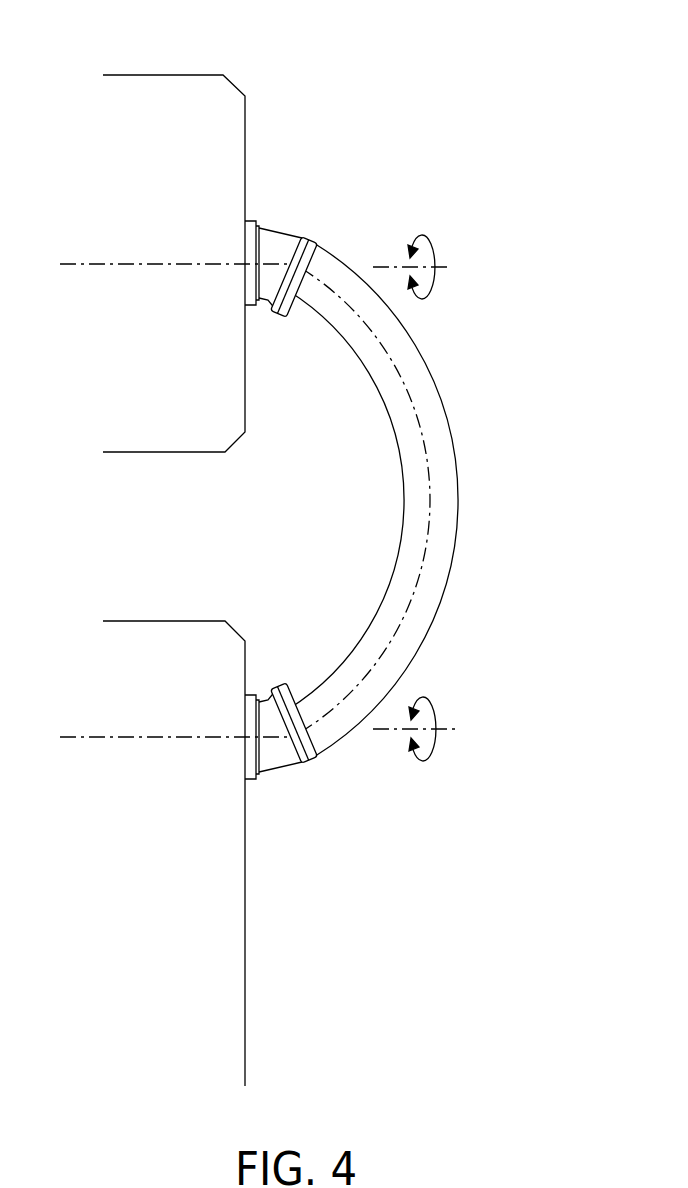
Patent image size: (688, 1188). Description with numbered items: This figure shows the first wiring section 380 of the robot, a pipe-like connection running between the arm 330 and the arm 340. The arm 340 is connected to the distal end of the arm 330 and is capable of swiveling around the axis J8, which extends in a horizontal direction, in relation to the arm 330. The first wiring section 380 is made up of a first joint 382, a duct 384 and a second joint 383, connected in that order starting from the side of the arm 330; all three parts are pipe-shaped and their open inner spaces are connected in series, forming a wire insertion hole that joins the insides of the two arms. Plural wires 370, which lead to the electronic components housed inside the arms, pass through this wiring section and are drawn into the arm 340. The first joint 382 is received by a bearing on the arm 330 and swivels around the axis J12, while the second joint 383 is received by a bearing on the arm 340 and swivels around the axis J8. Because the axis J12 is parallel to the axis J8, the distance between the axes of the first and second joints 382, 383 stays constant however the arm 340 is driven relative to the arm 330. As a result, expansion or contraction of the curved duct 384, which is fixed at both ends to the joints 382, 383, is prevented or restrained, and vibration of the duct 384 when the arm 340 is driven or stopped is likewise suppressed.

The arm 330 is at (210, 988).
The arm 340 is at (167, 92).
The wires 370 is at (428, 549).
The first wiring section 380 is at (417, 505).
The first joint 382 is at (280, 777).
The second joint 383 is at (278, 246).
The duct 384 is at (428, 400).
The axis J8 is at (436, 266).
The axis J12 is at (437, 729).